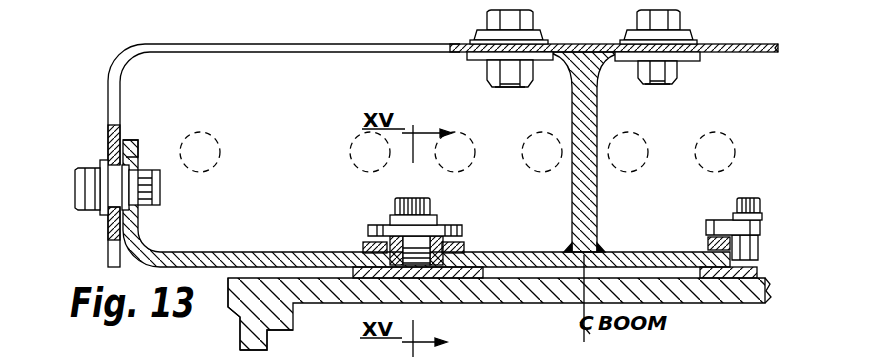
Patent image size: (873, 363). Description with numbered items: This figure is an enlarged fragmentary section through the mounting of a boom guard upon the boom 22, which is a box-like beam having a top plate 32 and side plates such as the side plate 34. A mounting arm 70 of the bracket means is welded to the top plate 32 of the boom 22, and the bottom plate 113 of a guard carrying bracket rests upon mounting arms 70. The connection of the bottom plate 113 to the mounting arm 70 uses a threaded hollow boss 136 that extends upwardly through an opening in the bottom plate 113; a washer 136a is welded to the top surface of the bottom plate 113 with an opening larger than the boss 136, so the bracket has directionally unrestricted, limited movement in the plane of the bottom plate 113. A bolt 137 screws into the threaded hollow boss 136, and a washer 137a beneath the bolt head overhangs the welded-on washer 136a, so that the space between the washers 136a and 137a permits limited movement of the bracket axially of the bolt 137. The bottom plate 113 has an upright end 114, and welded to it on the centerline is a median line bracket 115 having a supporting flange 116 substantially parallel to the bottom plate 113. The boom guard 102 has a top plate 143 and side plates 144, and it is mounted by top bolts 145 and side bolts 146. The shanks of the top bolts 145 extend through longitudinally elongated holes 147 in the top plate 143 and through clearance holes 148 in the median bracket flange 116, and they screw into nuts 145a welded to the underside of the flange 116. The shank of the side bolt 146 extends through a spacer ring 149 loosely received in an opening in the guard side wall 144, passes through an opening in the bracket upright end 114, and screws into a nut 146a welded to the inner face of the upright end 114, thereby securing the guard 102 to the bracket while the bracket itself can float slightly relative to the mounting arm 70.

The boom 22 is at (227, 308).
The top plate 32 is at (499, 303).
The side plate 34 is at (273, 345).
The mounting arm 70 is at (368, 277).
The boom guard 102 is at (296, 15).
The bottom plate 113 is at (219, 251).
The upright end 114 is at (133, 140).
The median line bracket 115 is at (572, 174).
The supporting flange 116 is at (467, 55).
The threaded hollow boss 136 is at (437, 265).
The washer 136a is at (359, 249).
The bolt 137 is at (422, 198).
The washer 137a is at (478, 214).
The top plate 143 is at (244, 41).
The side plate 144 is at (108, 107).
The top bolt 145 is at (637, 17).
The nut 145a is at (532, 82).
The side bolt 146 is at (75, 168).
The nut 146a is at (161, 177).
The elongated hole 147 is at (468, 45).
The clearance hole 148 is at (495, 64).
The spacer ring 149 is at (115, 228).